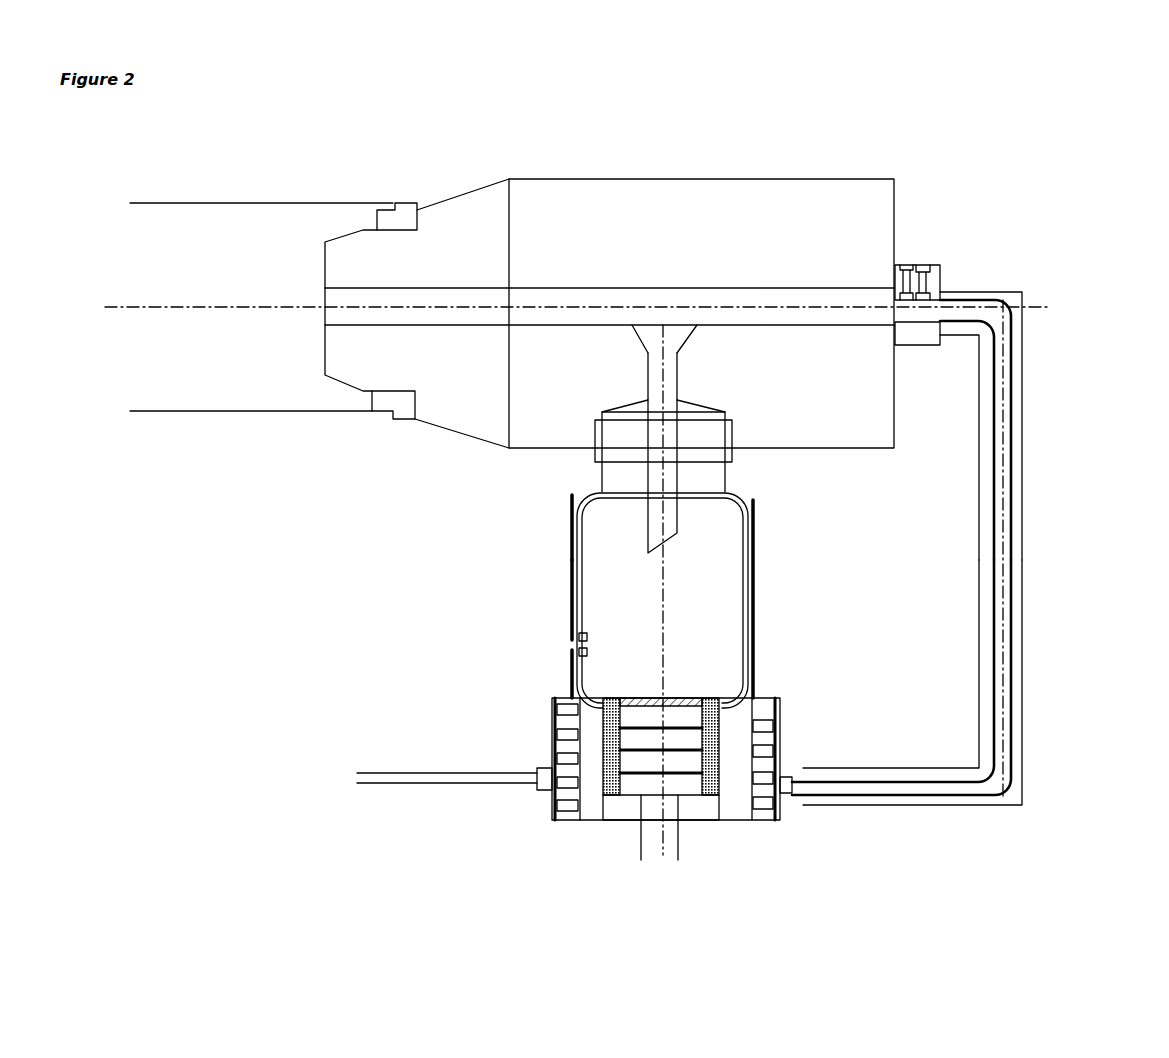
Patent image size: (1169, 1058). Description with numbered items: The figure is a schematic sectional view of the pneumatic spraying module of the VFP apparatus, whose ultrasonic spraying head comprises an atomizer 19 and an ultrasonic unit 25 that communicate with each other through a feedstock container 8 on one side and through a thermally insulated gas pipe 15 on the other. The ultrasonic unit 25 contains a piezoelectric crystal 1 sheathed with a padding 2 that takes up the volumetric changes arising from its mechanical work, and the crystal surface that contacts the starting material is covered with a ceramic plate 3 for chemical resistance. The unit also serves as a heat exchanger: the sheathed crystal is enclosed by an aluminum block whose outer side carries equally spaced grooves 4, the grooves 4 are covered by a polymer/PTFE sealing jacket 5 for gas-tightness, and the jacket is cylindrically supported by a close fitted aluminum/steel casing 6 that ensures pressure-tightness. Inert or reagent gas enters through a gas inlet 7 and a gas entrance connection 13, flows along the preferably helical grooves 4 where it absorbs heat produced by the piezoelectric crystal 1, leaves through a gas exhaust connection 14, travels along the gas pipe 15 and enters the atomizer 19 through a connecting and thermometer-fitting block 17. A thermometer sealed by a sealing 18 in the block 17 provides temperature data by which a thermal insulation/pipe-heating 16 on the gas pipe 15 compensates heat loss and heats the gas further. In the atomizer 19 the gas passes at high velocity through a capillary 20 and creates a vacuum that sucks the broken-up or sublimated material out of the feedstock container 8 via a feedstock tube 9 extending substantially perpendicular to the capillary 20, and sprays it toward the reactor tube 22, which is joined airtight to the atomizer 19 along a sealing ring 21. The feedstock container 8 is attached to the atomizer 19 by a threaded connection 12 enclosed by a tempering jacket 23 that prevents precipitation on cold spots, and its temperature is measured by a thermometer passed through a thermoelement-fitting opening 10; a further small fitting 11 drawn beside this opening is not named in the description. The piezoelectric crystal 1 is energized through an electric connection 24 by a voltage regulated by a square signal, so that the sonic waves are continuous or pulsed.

The piezoelectric crystal 1 is at (663, 722).
The padding 2 is at (713, 770).
The ceramic plate 3 is at (722, 710).
The grooves 4 is at (573, 738).
The sealing jacket 5 is at (573, 749).
The casing 6 is at (775, 812).
The gas inlet 7 is at (398, 777).
The feedstock container 8 is at (572, 610).
The feedstock tube 9 is at (647, 537).
The thermoelement-fitting opening 10 is at (575, 637).
The thermocouple 11 is at (587, 652).
The threaded connection 12 is at (732, 437).
The gas entrance connection 13 is at (537, 787).
The gas exhaust connection 14 is at (785, 793).
The gas pipe 15 is at (975, 307).
The thermal insulation/pipe-heating 16 is at (1020, 551).
The connecting and thermometer-fitting block 17 is at (930, 265).
The sealing 18 is at (905, 265).
The atomizer 19 is at (777, 207).
The capillary 20 is at (553, 296).
The sealing ring 21 is at (407, 212).
The reactor tube 22 is at (187, 202).
The tempering jacket 23 is at (572, 498).
The electric connection 24 is at (640, 840).
The ultrasonic unit 25 is at (735, 812).